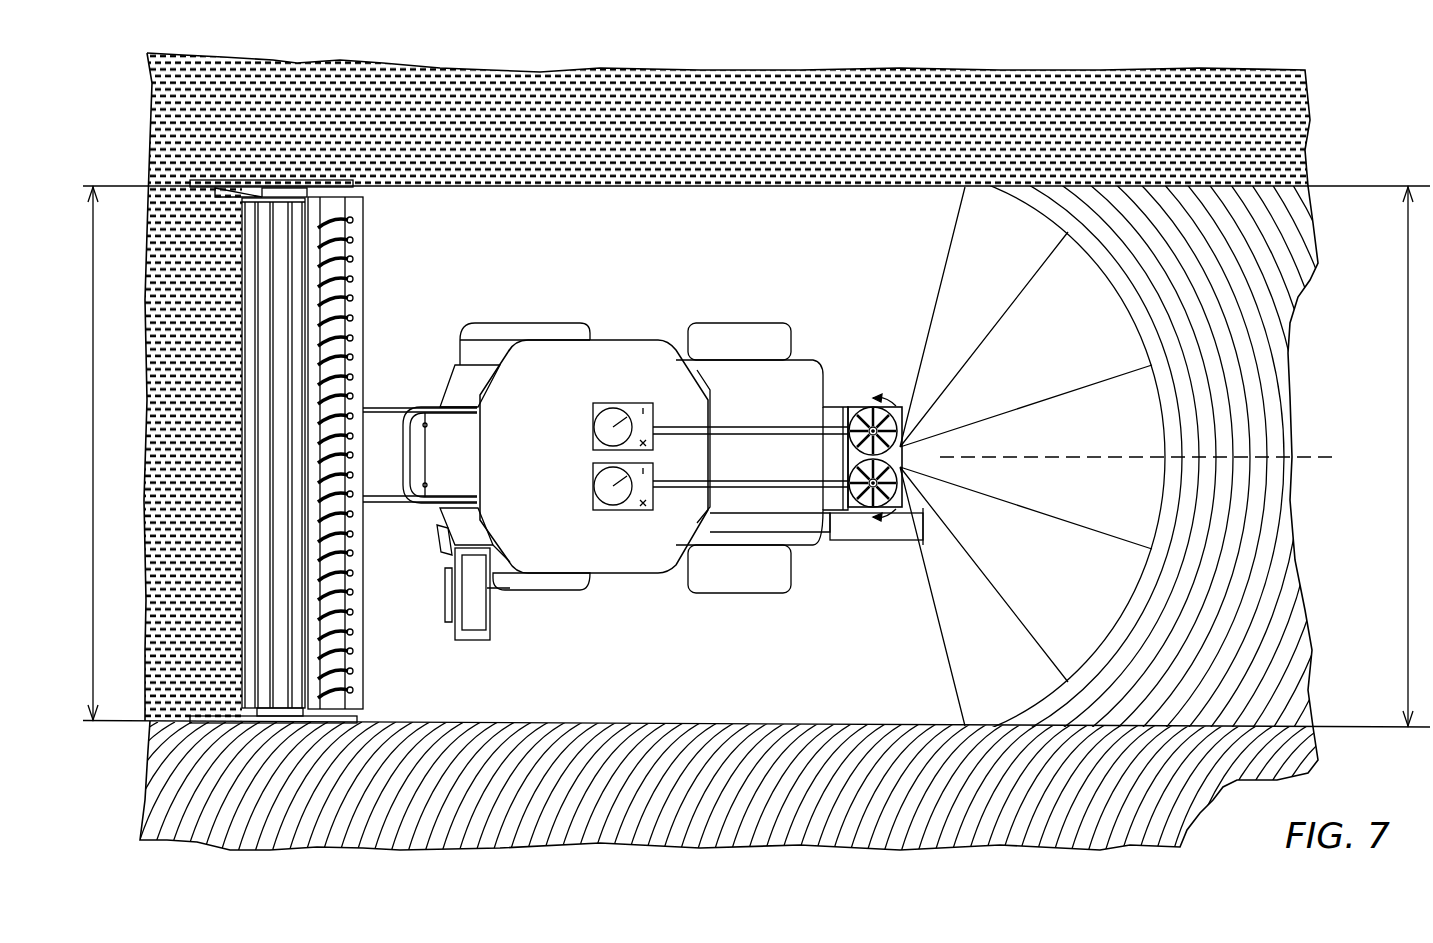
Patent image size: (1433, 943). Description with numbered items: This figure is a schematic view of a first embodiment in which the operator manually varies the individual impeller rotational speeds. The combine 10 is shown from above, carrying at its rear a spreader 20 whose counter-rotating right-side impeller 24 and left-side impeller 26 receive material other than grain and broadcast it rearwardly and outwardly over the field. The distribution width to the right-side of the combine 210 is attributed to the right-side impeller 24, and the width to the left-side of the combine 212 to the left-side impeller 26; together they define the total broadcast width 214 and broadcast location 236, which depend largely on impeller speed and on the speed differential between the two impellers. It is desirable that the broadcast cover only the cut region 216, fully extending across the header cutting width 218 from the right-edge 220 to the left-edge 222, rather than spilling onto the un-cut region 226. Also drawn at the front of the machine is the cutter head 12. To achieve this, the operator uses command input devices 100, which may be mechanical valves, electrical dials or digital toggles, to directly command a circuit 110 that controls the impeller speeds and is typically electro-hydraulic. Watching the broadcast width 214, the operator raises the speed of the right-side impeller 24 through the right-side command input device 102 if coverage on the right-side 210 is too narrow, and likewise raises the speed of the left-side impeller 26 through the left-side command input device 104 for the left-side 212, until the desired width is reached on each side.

The combine 10 is at (552, 457).
The cutter head 12 is at (362, 650).
The spreader 20 is at (998, 456).
The right-side impeller 24 is at (860, 400).
The left-side impeller 26 is at (860, 515).
The command input device 100 is at (692, 401).
The right-side command input device 102 is at (600, 415).
The left-side command input device 104 is at (603, 500).
The circuit 110 is at (750, 410).
The right-side of the combine 210 is at (1300, 212).
The left-side of the combine 212 is at (1280, 685).
The broadcast width 214 is at (1413, 456).
The cut region 216 is at (670, 663).
The header cutting width 218 is at (100, 453).
The right-edge 220 is at (128, 184).
The left-edge 222 is at (128, 728).
The un-cut region 226 is at (612, 85).
The broadcast location 236 is at (1300, 446).